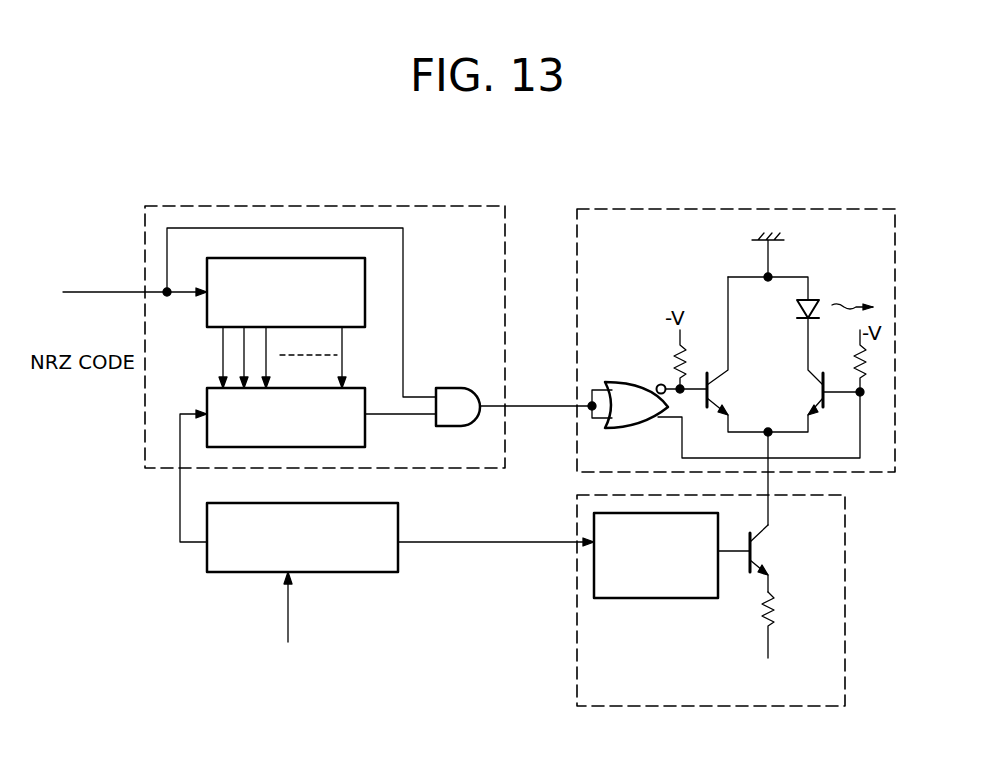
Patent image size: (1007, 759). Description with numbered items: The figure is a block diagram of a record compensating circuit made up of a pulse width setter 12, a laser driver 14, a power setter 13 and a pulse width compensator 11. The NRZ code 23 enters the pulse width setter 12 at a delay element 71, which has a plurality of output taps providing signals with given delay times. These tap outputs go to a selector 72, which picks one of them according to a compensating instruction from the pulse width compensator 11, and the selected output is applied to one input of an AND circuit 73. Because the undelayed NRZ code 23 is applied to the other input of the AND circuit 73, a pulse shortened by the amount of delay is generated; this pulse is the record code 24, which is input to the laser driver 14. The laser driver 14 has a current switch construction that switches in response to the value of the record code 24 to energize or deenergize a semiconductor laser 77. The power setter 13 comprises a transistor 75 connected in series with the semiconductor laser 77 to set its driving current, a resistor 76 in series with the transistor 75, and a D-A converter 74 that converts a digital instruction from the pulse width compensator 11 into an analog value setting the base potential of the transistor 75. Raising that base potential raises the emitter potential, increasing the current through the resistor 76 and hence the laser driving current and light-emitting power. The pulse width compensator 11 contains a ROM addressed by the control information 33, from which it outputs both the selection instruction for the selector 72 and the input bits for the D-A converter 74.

The pulse width compensator 11 is at (225, 574).
The pulse width setter 12 is at (397, 206).
The power setter 13 is at (845, 613).
The laser driver 14 is at (808, 209).
The NRZ code 23 is at (100, 294).
The record code 24 is at (539, 402).
The control information 33 is at (289, 620).
The delay element 71 is at (367, 247).
The selector 72 is at (370, 448).
The AND circuit 73 is at (456, 388).
The D-A converter 74 is at (660, 600).
The transistor 75 is at (773, 549).
The resistor 76 is at (773, 613).
The semiconductor laser 77 is at (815, 299).